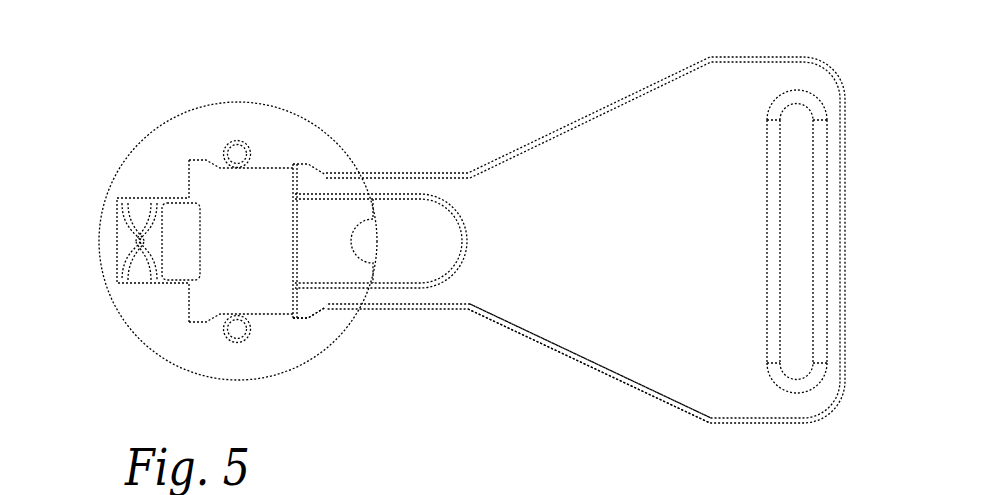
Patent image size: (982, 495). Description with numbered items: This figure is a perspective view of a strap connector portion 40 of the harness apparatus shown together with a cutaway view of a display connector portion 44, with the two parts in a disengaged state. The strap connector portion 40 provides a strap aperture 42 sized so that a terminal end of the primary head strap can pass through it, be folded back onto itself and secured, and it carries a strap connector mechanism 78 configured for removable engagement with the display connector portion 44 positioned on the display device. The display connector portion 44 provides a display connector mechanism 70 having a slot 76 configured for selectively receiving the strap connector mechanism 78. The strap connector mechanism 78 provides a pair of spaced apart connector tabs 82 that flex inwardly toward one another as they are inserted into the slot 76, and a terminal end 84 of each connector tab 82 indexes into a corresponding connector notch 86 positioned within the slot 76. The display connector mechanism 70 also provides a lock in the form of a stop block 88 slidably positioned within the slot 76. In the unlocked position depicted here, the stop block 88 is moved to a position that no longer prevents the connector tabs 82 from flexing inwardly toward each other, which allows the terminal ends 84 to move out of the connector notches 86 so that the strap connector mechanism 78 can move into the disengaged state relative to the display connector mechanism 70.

The strap connector portion 40 is at (605, 84).
The strap aperture 42 is at (806, 137).
The display connector portion 44 is at (283, 82).
The display connector mechanism 70 is at (183, 325).
The slot 76 is at (342, 319).
The strap connector mechanism 78 is at (608, 292).
The connector tab 82 is at (408, 192).
The terminal end 84 is at (317, 178).
The connector notch 86 is at (197, 156).
The stop block 88 is at (167, 224).